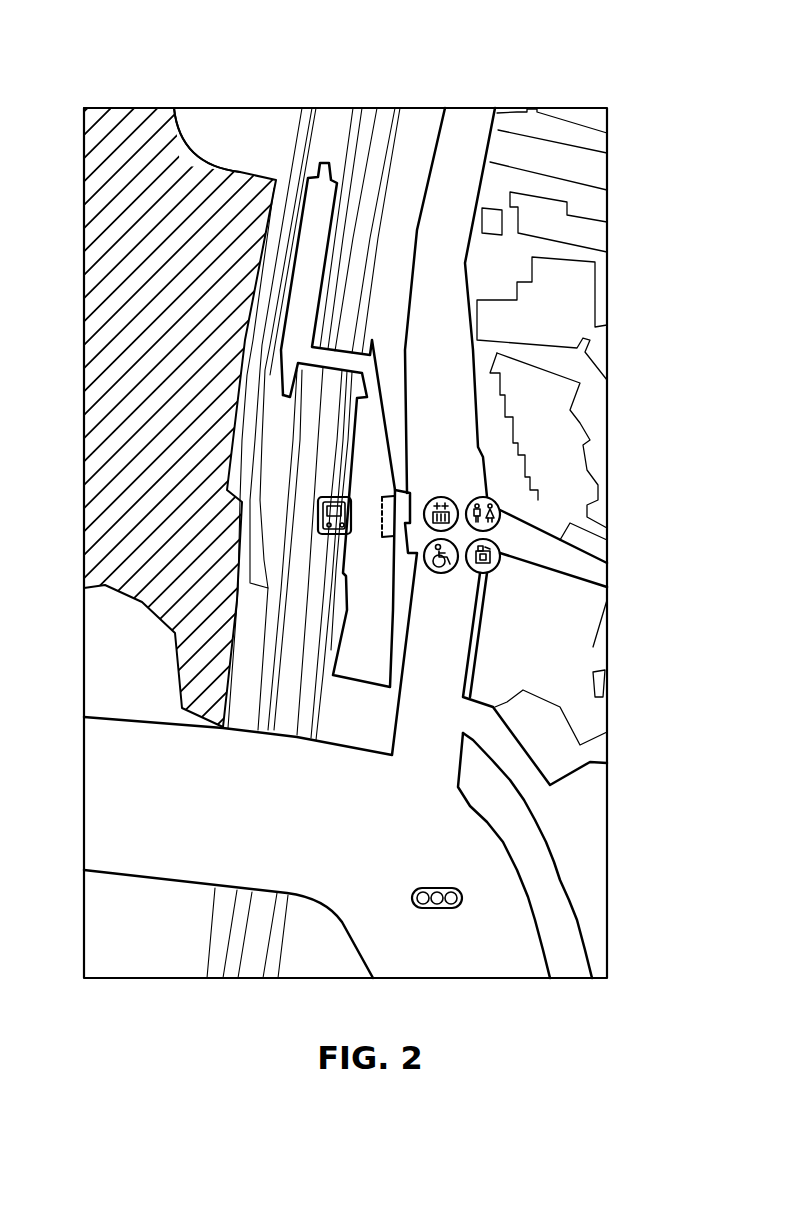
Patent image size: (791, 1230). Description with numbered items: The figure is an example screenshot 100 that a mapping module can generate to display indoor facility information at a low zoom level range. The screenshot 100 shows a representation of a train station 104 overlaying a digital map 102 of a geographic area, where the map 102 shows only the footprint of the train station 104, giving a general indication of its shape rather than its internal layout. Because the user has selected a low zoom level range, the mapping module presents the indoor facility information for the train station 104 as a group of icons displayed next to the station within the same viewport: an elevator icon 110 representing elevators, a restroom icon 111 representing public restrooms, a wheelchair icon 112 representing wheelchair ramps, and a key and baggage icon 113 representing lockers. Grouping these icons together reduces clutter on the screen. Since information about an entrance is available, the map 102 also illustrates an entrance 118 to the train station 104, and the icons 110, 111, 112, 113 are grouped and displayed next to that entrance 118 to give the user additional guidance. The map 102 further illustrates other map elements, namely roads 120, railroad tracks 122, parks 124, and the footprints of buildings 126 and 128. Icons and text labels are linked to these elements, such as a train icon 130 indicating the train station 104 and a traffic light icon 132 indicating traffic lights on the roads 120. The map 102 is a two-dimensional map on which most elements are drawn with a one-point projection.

The screenshot 100 is at (494, 62).
The digital map 102 is at (207, 132).
The train station 104 is at (378, 372).
The elevator icon 110 is at (443, 497).
The restroom icon 111 is at (498, 503).
The wheelchair icon 112 is at (453, 570).
The key and baggage icon 113 is at (500, 570).
The entrance 118 is at (397, 513).
The roads 120 is at (455, 173).
The railroad tracks 122 is at (287, 722).
The parks 124 is at (97, 213).
The footprint of building 126 is at (567, 295).
The footprint of building 128 is at (582, 698).
The train icon 130 is at (316, 537).
The traffic light icon 132 is at (463, 897).